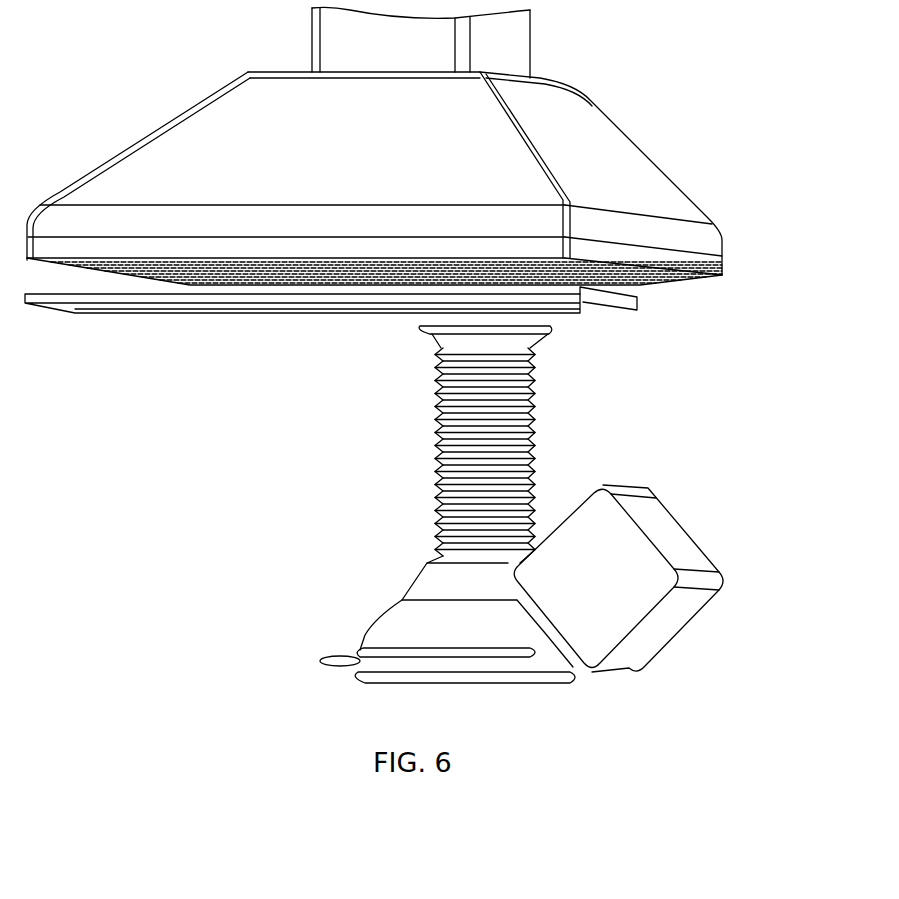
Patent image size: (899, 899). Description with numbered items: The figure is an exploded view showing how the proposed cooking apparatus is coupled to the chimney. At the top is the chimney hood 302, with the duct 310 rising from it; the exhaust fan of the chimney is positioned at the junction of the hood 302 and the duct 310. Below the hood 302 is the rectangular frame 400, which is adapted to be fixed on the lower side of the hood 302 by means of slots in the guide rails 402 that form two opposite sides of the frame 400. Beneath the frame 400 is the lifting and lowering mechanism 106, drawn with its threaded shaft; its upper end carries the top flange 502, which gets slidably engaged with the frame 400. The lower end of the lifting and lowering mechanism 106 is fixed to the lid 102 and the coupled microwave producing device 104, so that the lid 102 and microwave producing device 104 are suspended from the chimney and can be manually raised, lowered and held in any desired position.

The lid 102 is at (387, 638).
The microwave producing device 104 is at (635, 538).
The lifting and lowering mechanism 106 is at (537, 380).
The hood 302 is at (617, 160).
The duct 310 is at (513, 60).
The frame 400 is at (176, 326).
The guide rails 402 is at (640, 292).
The top flange 502 is at (416, 343).